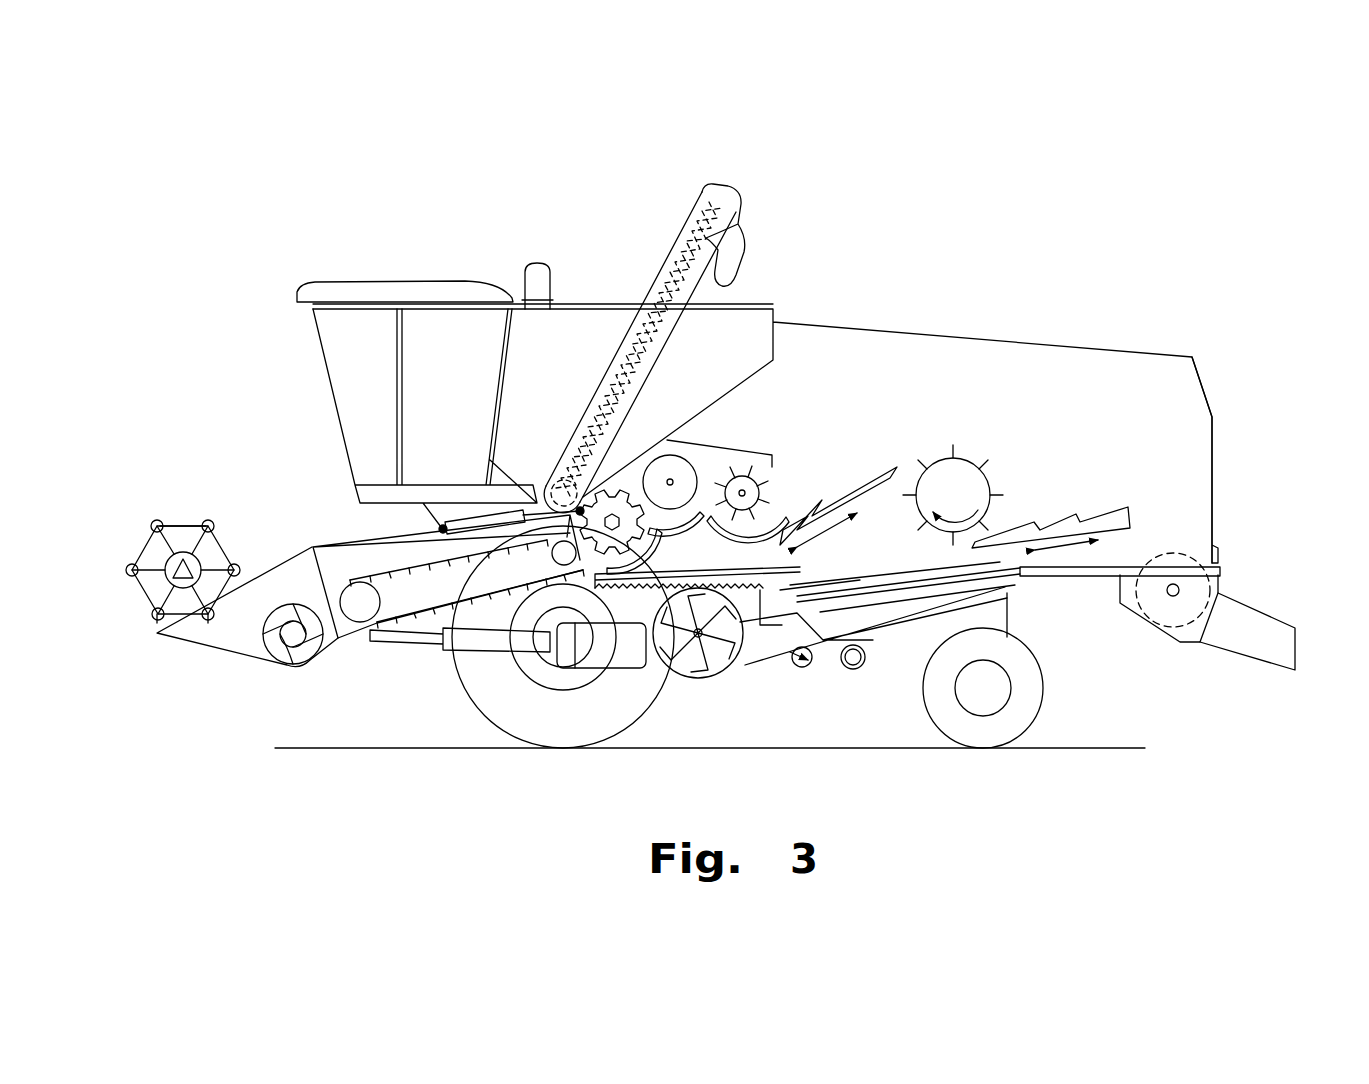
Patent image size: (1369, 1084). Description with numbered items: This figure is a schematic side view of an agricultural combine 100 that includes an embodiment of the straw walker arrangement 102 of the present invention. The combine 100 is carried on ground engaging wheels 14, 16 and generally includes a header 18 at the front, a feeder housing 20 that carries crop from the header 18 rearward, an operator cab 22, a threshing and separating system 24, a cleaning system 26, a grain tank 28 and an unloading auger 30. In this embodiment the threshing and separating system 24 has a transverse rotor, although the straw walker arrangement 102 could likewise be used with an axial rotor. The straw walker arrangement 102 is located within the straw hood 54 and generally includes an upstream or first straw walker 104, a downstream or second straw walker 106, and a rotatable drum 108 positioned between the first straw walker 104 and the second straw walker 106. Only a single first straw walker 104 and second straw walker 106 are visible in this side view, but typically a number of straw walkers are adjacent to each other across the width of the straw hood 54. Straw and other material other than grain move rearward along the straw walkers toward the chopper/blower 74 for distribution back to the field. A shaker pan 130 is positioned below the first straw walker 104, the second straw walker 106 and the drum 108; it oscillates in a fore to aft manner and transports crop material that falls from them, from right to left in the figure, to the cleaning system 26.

The agricultural combine 100 is at (957, 262).
The ground engaging wheel 14 is at (457, 700).
The ground engaging wheel 16 is at (1044, 705).
The header 18 is at (220, 662).
The feeder housing 20 is at (348, 542).
The operator cab 22 is at (410, 280).
The threshing and separating system 24 is at (755, 440).
The cleaning system 26 is at (831, 676).
The grain tank 28 is at (627, 298).
The unloading auger 30 is at (725, 188).
The straw hood 54 is at (1204, 382).
The chopper/blower 74 is at (1152, 621).
The straw walker arrangement 102 is at (1031, 455).
The first straw walker 104 is at (863, 483).
The second straw walker 106 is at (1098, 510).
The rotatable drum 108 is at (993, 487).
The shaker pan 130 is at (855, 565).